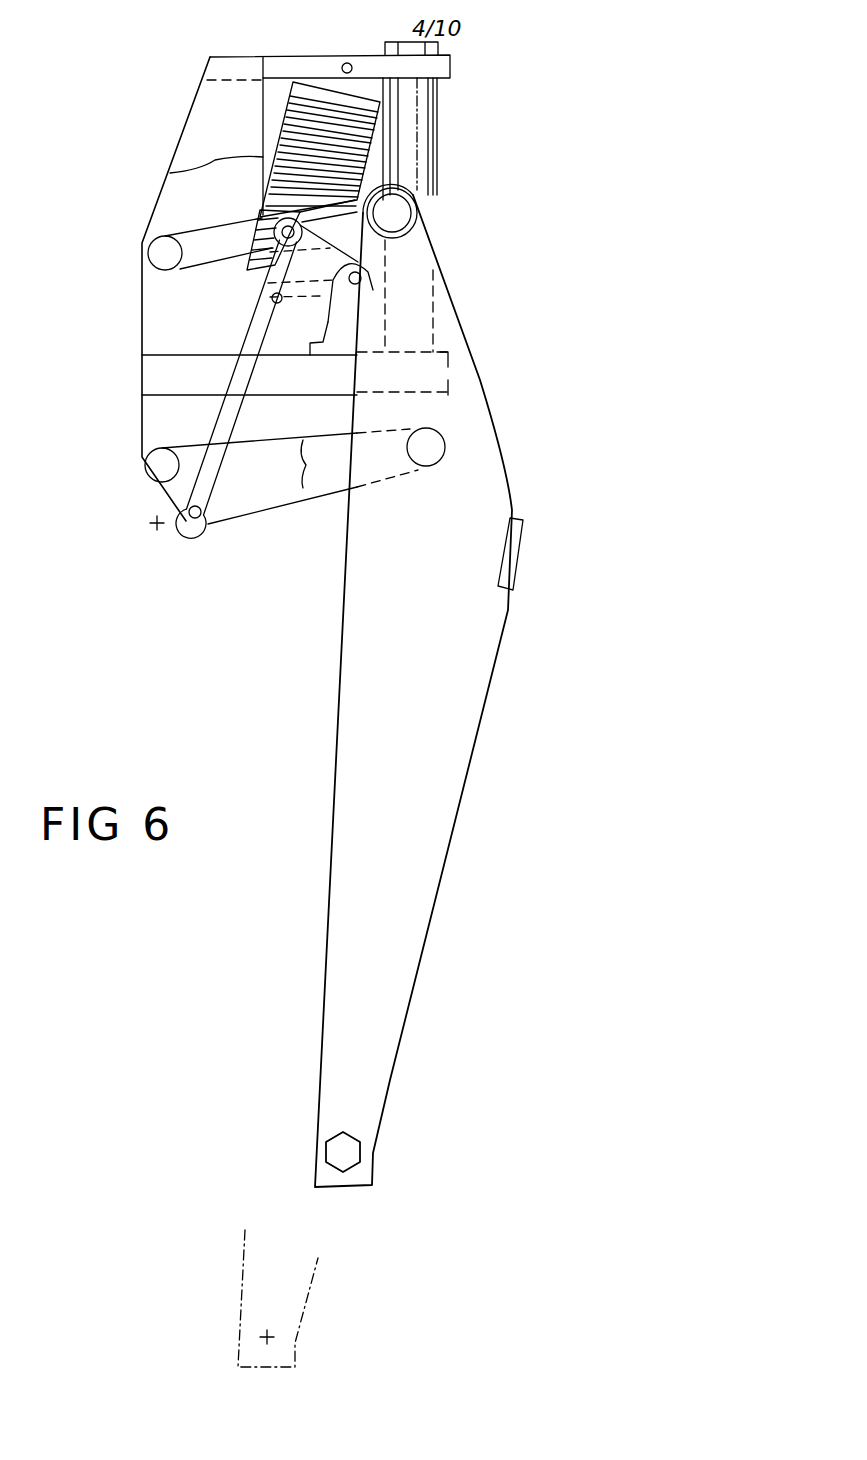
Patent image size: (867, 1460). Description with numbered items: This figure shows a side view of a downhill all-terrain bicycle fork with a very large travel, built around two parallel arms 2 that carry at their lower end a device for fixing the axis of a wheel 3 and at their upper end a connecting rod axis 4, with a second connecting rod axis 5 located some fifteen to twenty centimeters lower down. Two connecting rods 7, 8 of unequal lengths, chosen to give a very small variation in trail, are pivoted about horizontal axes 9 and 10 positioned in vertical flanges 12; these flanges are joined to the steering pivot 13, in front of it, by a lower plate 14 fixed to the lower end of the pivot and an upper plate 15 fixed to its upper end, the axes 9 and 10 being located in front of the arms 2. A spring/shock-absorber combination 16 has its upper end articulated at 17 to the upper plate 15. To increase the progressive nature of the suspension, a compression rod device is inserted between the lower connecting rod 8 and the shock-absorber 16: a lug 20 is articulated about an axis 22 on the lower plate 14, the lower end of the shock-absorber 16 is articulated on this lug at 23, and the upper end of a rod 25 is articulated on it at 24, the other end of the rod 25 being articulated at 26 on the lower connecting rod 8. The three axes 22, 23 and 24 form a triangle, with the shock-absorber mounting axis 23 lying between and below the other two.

The arms 2 is at (355, 752).
The wheel 3 is at (340, 1148).
The connecting rod axis 4 is at (400, 216).
The second connecting rod axis 5 is at (435, 447).
The connecting rod 7 is at (203, 242).
The lower connecting rod 8 is at (287, 492).
The horizontal axis 9 is at (160, 257).
The horizontal axis 10 is at (158, 467).
The vertical flanges 12 is at (200, 142).
The steering pivot 13 is at (417, 112).
The lower plate 14 is at (173, 373).
The upper plate 15 is at (443, 66).
The spring/shock-absorber combination 16 is at (343, 157).
The articulation point 17 is at (347, 62).
The lug 20 is at (313, 298).
The axis 22 is at (362, 280).
The articulation axis 23 is at (283, 304).
The articulation axis 24 is at (263, 220).
The rod 25 is at (228, 412).
The articulation axis 26 is at (195, 520).